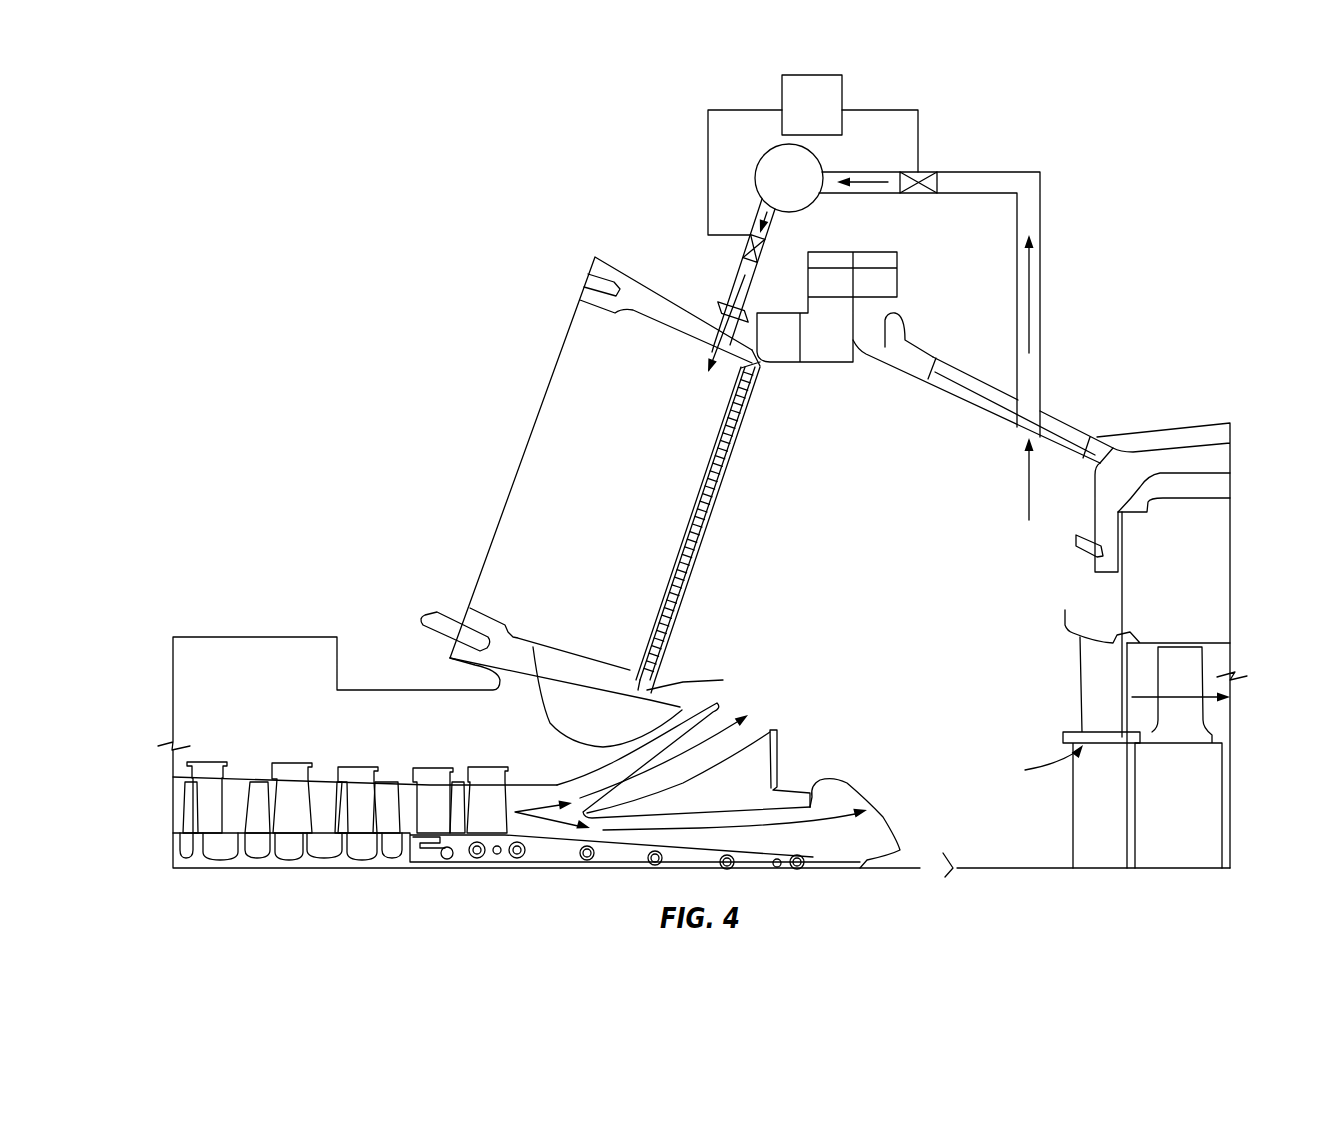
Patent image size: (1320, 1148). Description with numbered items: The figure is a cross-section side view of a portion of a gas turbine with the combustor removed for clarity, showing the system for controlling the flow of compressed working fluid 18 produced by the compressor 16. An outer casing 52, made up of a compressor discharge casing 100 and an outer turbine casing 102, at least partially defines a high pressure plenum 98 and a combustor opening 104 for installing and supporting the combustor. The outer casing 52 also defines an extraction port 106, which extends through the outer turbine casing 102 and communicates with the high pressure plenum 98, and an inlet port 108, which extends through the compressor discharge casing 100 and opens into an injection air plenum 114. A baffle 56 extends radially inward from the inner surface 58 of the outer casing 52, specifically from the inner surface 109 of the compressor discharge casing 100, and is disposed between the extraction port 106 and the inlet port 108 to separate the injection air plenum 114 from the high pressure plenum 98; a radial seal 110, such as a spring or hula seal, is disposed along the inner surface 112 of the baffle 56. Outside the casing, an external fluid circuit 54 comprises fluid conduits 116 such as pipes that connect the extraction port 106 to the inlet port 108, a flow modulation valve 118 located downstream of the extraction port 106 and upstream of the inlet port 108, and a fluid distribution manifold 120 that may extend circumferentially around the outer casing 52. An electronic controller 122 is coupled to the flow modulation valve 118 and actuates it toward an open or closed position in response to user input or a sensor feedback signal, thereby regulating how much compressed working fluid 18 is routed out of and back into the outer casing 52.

The compressor 16 is at (225, 637).
The compressed working fluid 18 is at (857, 173).
The outer casing 52 is at (612, 257).
The external fluid circuit 54 is at (1033, 157).
The baffle 56 is at (760, 368).
The inner surface 58 is at (733, 362).
The high pressure plenum 98 is at (939, 608).
The compressor discharge casing 100 is at (806, 350).
The outer turbine casing 102 is at (888, 310).
The combustor opening 104 is at (510, 483).
The extraction port 106 is at (1047, 420).
The inlet port 108 is at (718, 318).
The inner surface 109 is at (768, 365).
The radial seal 110 is at (703, 538).
The inner surface 112 is at (673, 618).
The injection air plenum 114 is at (621, 485).
The fluid conduit 116 is at (945, 171).
The flow modulation valve 118 is at (907, 193).
The fluid distribution manifold 120 is at (773, 193).
The electronic controller 122 is at (796, 120).